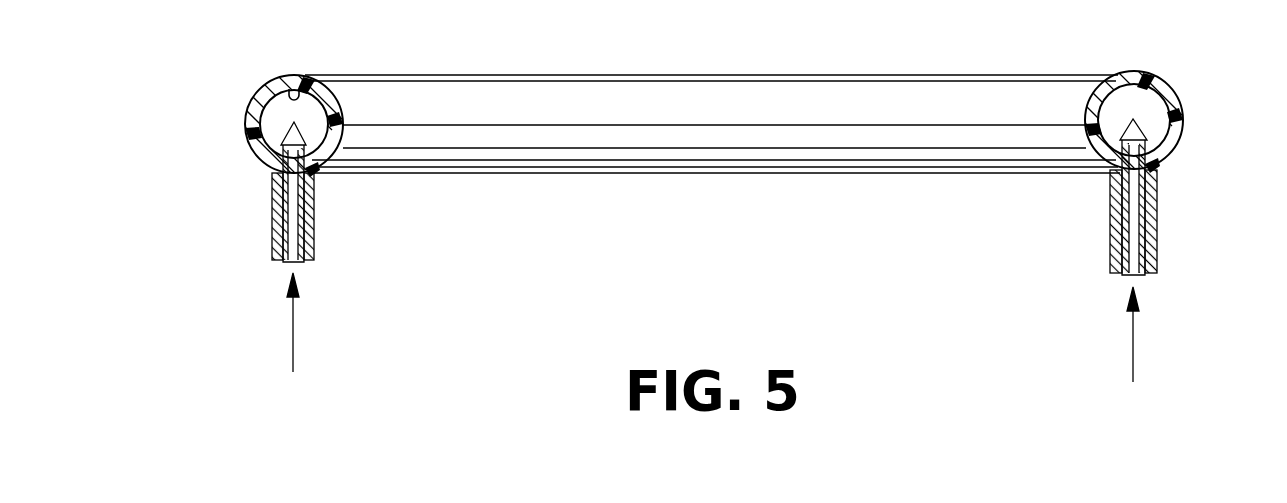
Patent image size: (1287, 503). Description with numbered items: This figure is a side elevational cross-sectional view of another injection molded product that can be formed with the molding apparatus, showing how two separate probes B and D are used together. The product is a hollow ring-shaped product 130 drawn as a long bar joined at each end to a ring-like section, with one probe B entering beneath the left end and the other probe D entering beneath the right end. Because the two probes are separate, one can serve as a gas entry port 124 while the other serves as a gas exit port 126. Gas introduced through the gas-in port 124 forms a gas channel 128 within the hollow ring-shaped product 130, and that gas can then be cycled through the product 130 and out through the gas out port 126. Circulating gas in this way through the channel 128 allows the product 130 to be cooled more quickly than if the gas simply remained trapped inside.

The gas entry port 124 is at (272, 142).
The gas exit port 126 is at (1150, 140).
The gas channel 128 is at (297, 87).
The hollow ring-shaped product 130 is at (752, 90).
The probe B is at (268, 216).
The probe D is at (1160, 220).